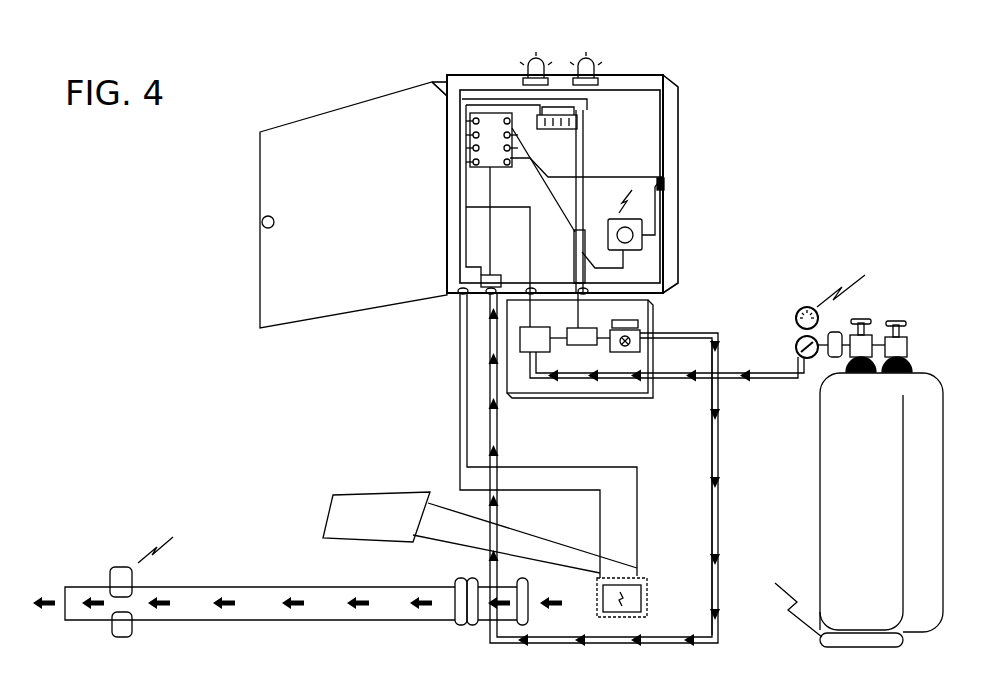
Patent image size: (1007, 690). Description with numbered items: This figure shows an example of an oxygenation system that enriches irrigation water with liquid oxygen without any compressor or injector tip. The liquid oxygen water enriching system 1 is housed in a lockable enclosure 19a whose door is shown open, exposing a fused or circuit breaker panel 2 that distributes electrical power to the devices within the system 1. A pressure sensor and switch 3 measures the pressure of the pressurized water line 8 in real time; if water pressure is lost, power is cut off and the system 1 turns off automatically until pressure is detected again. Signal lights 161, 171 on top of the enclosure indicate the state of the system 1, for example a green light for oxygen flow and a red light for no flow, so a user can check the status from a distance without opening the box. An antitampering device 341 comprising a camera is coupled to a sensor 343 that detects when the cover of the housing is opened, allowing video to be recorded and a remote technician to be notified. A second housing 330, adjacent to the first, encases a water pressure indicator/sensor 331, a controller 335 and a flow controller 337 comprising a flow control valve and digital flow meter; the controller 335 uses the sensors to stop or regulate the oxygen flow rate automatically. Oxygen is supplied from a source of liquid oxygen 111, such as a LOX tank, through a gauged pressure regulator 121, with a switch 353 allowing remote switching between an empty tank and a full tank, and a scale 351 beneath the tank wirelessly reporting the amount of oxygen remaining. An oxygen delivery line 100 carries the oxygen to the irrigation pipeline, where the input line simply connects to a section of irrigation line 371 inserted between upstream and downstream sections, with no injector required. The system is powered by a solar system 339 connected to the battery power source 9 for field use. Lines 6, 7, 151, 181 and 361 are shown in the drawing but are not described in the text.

The liquid oxygen water enriching system 1 is at (452, 71).
The lockable enclosure 19a is at (247, 208).
The fused or circuit breaker panel 2 is at (484, 126).
The pressure sensor and switch 3 is at (491, 273).
The cable conduit 6 is at (543, 435).
The gas feed pipe 7 is at (604, 469).
The pressurized water line 8 is at (297, 594).
The power source 9 is at (614, 597).
The oxygen delivery line 100 is at (722, 547).
The source of liquid oxygen 111 is at (864, 461).
The gauged pressure regulator 121 is at (797, 307).
The control module 151 is at (578, 120).
The signal light 161 is at (590, 56).
The signal light 171 is at (541, 56).
The cable 181 is at (590, 212).
The second housing 330 is at (632, 363).
The water pressure indicator/sensor 331 is at (535, 339).
The controller 335 is at (582, 336).
The flow controller 337 is at (647, 335).
The solar system 339 is at (480, 532).
The antitampering device 341 is at (643, 246).
The sensor 343 is at (668, 182).
The scale 351 is at (822, 638).
The switch 353 is at (843, 333).
The pipe sensor 361 is at (120, 567).
The section of irrigation line 371 is at (455, 582).